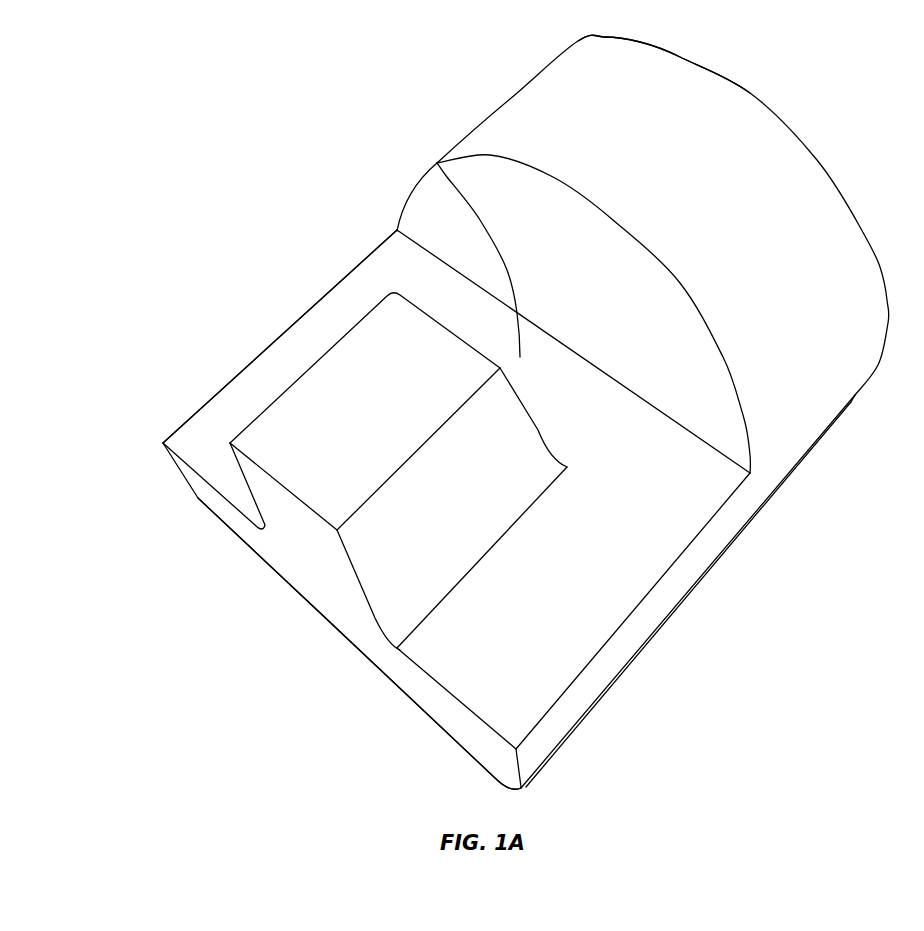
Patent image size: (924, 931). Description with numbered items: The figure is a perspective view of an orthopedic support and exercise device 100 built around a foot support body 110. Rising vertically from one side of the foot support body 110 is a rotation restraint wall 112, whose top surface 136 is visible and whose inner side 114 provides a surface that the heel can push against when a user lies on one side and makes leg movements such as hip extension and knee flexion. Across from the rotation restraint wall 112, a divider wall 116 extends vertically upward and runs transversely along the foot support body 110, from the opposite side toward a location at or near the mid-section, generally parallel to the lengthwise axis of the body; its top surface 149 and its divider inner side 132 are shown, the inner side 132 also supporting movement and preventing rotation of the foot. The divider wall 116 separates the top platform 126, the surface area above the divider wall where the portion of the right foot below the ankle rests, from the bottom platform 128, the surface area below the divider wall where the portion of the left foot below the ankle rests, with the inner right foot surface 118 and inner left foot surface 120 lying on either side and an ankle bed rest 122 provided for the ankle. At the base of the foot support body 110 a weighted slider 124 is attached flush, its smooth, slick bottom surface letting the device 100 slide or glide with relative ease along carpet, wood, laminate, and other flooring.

The orthopedic support and exercise device 100 is at (218, 172).
The foot support body 110 is at (323, 600).
The rotation restraint wall 112 is at (792, 173).
The inner side of rotation restraint wall 114 is at (723, 412).
The divider wall 116 is at (300, 518).
The inner right foot surface 118 is at (257, 412).
The inner left foot surface 120 is at (358, 640).
The ankle bed rest 122 is at (434, 166).
The weighted slider 124 is at (598, 698).
The top platform 126 is at (270, 358).
The bottom platform 128 is at (467, 707).
The divider inner side 132 is at (422, 300).
The top surface of rotation restraint wall 136 is at (752, 93).
The top surface of divider wall 149 is at (317, 450).